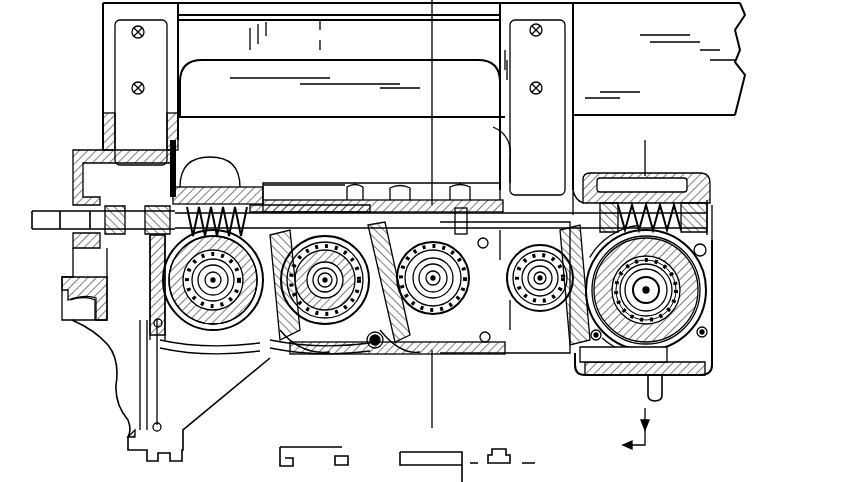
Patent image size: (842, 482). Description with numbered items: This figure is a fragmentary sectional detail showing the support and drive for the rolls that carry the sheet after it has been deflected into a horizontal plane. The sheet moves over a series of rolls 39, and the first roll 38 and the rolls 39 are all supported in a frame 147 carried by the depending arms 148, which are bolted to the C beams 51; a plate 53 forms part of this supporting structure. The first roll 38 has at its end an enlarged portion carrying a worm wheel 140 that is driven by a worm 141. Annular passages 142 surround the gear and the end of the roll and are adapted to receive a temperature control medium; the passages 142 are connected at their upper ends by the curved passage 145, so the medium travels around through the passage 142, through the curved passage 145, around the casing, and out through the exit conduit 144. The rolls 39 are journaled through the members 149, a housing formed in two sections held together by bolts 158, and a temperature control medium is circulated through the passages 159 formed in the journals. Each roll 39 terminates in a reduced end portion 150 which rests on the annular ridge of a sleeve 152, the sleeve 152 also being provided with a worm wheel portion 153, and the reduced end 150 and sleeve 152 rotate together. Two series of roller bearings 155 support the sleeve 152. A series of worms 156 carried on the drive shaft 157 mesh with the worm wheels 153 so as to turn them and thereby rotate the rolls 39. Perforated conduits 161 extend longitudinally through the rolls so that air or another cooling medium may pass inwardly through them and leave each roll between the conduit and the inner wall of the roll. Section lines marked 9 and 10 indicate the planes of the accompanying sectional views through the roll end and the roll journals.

The left frame plate 53 is at (103, 78).
The C beams 51 is at (705, 18).
The depending arms 148 is at (545, 108).
The Fig. 10 section line 10 is at (432, 38).
The Fig. 9 section line 9 is at (636, 136).
The curved passage 145 is at (662, 170).
The worm 141 is at (707, 217).
The worm wheel 140 is at (713, 262).
The first roll 38 is at (690, 289).
The perforated conduits 161 is at (662, 298).
The passages 142 is at (683, 358).
The conduit 144 is at (665, 390).
The rolls 39 is at (513, 282).
The frame 147 is at (566, 362).
The passages 159 is at (432, 362).
The worm wheel portion 153 is at (240, 320).
The reduced end portion 150 is at (200, 322).
The bolts 158 is at (282, 362).
The members 149 is at (395, 355).
The sleeve 152 is at (462, 218).
The worms 156 is at (250, 188).
The drive shaft 157 is at (262, 205).
The roller bearings 155 is at (430, 200).